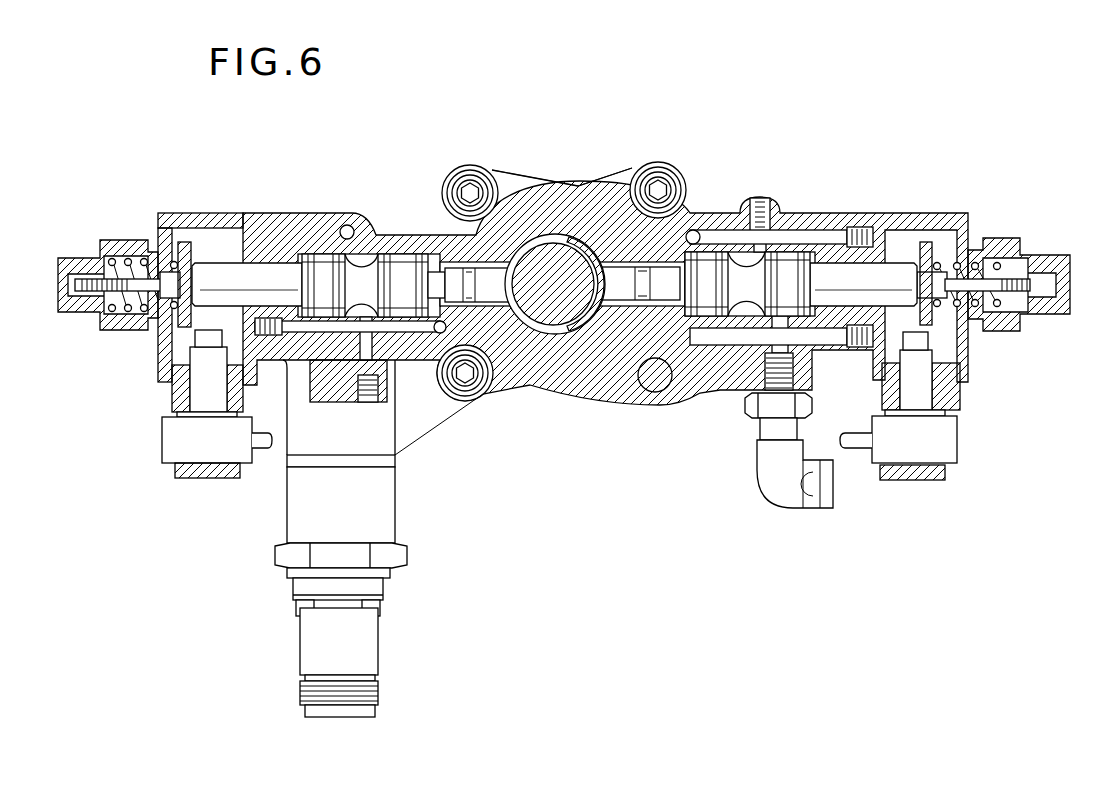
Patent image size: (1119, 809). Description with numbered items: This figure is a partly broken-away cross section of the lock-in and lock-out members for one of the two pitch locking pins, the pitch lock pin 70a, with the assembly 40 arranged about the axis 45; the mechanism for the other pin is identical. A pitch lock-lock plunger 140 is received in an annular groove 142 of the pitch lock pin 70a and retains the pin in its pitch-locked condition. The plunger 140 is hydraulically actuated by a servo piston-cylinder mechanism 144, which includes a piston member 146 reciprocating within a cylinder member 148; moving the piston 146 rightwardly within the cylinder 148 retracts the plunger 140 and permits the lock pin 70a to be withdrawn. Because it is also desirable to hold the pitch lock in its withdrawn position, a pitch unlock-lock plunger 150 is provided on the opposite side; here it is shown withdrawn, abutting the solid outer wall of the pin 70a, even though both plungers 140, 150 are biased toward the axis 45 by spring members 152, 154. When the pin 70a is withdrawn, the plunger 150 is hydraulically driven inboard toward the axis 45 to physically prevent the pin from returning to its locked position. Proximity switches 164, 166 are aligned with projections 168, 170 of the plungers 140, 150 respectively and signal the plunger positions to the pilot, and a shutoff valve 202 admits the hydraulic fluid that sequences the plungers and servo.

The valve assembly 40 is at (710, 160).
The axis 45 is at (558, 287).
The pitch lock pin 70a is at (577, 186).
The pitch lock-lock plunger 140 is at (787, 262).
The annular groove 142 is at (585, 247).
The servo piston-cylinder mechanism 144 is at (826, 236).
The piston member 146 is at (766, 308).
The cylinder member 148 is at (843, 345).
The pitch unlock-lock plunger 150 is at (403, 265).
The spring member 152 is at (122, 262).
The spring member 154 is at (990, 258).
The proximity switch 164 is at (900, 406).
The proximity switch 166 is at (217, 404).
The projection 168 is at (925, 250).
The projection 170 is at (184, 240).
The shutoff valve 202 is at (379, 538).